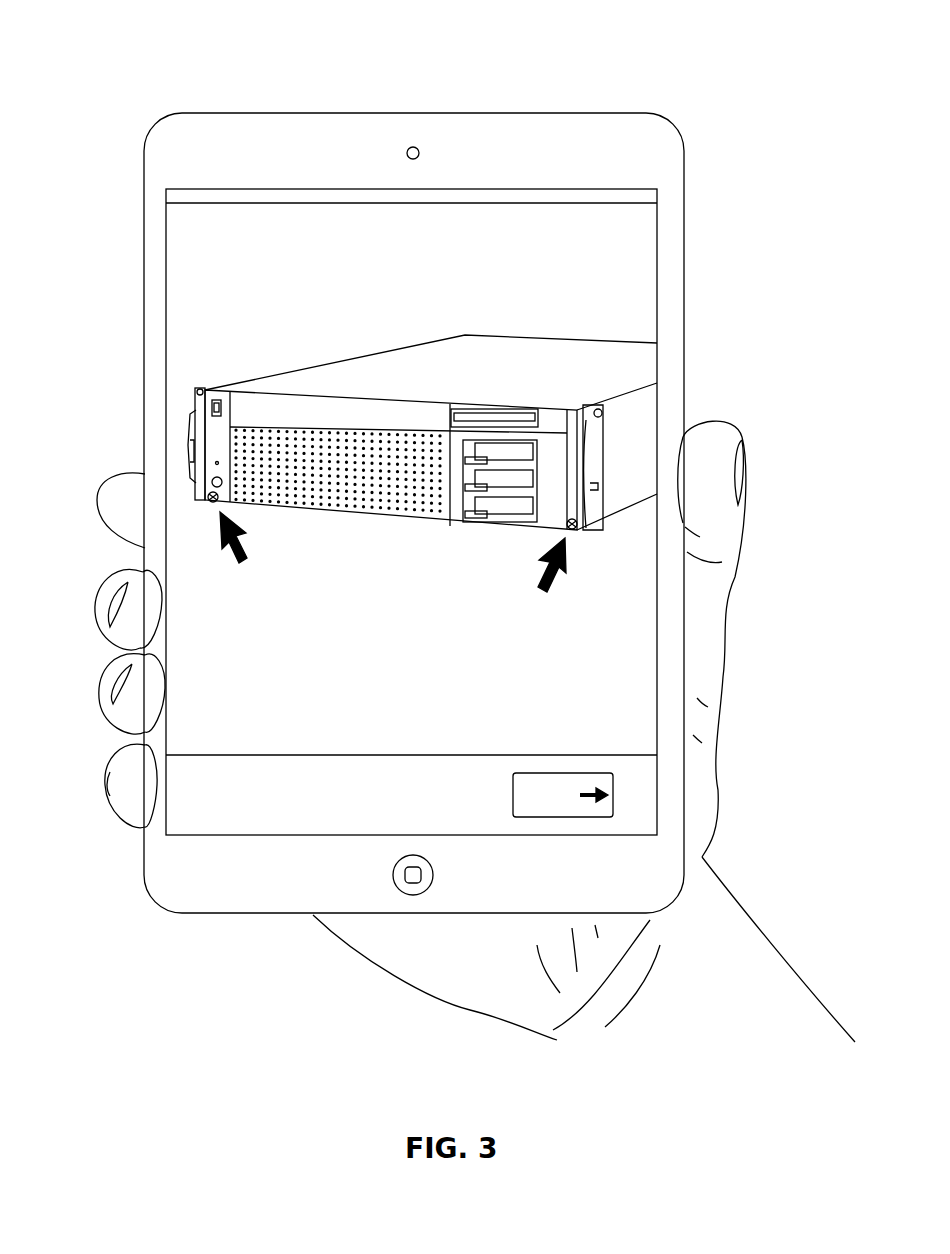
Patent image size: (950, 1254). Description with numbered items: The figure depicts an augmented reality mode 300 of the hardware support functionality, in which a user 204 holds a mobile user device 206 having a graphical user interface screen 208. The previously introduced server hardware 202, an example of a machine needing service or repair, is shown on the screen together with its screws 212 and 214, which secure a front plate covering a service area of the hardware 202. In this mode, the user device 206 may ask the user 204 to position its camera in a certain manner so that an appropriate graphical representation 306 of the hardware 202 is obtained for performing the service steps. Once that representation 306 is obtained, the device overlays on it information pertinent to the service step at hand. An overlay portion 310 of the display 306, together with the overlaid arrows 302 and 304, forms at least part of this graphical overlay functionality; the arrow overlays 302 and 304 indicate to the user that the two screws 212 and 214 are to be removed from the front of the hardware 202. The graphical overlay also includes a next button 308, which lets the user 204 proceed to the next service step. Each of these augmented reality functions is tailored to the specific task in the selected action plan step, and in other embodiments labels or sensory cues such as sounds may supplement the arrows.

The augmented reality mode 300 is at (83, 90).
The mobile user device 206 is at (684, 347).
The graphical user interface screen 208 is at (657, 223).
The graphical representation 306 is at (208, 282).
The server hardware 202 is at (396, 349).
The screw 212 is at (209, 502).
The screw 214 is at (573, 533).
The arrow overlay 304 is at (250, 553).
The arrow overlay 302 is at (543, 576).
The overlay portion 310 is at (212, 808).
The next button 308 is at (613, 788).
The user 204 is at (750, 917).